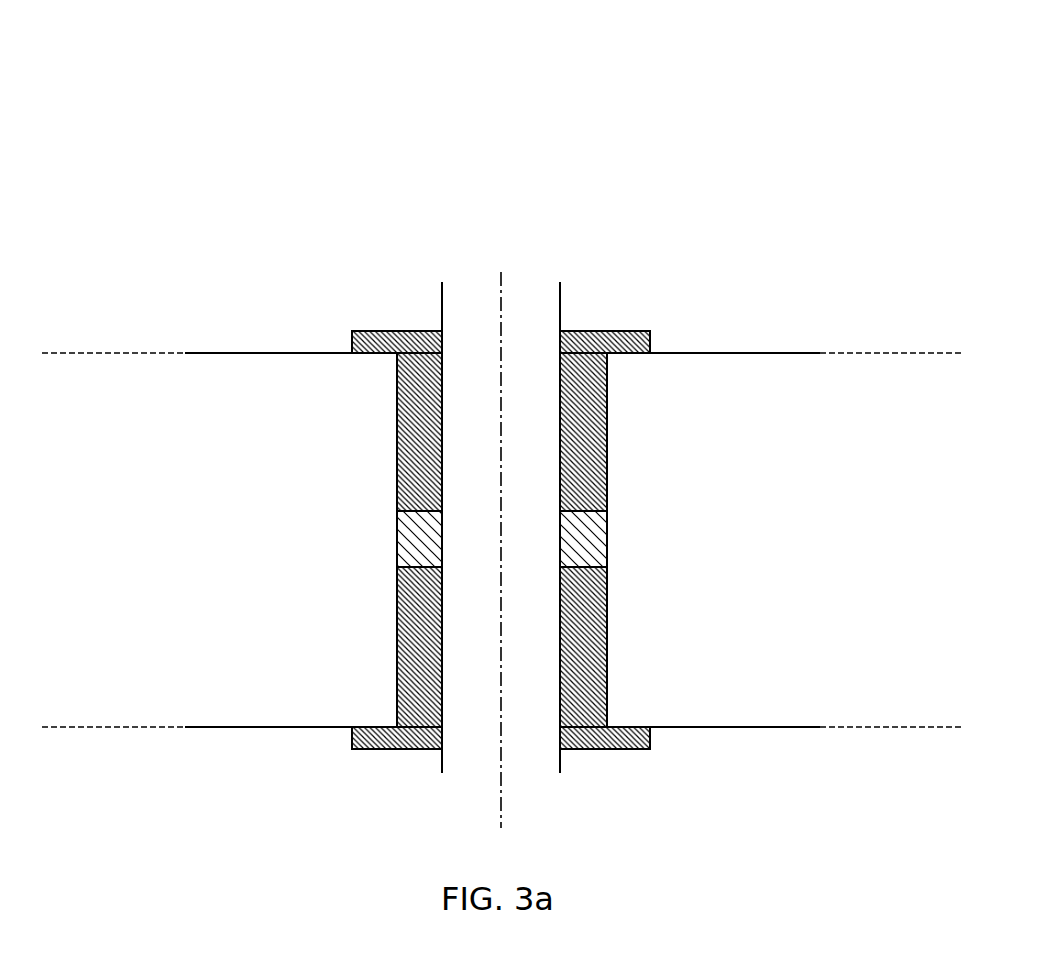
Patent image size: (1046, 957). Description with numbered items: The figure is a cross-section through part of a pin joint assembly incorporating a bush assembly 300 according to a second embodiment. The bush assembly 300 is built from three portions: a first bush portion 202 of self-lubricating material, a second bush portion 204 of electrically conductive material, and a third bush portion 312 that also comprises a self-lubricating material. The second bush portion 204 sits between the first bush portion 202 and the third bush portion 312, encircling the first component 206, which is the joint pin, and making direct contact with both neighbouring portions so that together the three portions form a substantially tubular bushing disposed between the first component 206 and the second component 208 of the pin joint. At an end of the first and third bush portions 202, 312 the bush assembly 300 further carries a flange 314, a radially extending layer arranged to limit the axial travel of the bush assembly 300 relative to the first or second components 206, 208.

The bush assembly 300 is at (338, 185).
The first bush portion 202 is at (397, 662).
The second bush portion 204 is at (397, 540).
The first component 206 is at (528, 556).
The second component 208 is at (198, 556).
The third bush portion 312 is at (397, 452).
The flange 314 is at (392, 331).